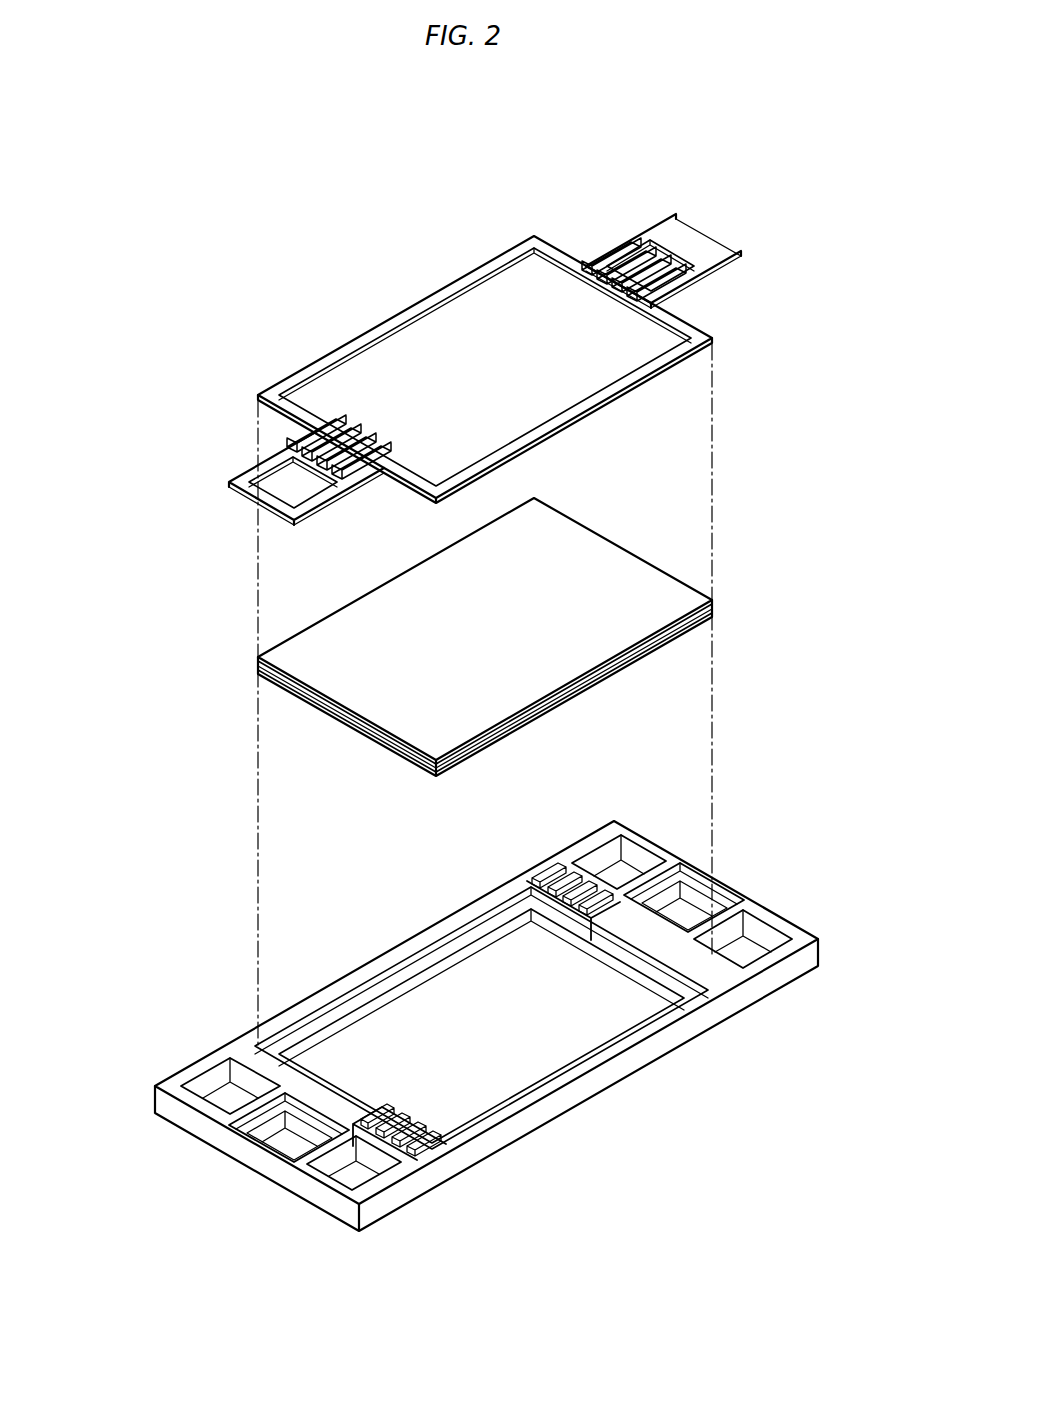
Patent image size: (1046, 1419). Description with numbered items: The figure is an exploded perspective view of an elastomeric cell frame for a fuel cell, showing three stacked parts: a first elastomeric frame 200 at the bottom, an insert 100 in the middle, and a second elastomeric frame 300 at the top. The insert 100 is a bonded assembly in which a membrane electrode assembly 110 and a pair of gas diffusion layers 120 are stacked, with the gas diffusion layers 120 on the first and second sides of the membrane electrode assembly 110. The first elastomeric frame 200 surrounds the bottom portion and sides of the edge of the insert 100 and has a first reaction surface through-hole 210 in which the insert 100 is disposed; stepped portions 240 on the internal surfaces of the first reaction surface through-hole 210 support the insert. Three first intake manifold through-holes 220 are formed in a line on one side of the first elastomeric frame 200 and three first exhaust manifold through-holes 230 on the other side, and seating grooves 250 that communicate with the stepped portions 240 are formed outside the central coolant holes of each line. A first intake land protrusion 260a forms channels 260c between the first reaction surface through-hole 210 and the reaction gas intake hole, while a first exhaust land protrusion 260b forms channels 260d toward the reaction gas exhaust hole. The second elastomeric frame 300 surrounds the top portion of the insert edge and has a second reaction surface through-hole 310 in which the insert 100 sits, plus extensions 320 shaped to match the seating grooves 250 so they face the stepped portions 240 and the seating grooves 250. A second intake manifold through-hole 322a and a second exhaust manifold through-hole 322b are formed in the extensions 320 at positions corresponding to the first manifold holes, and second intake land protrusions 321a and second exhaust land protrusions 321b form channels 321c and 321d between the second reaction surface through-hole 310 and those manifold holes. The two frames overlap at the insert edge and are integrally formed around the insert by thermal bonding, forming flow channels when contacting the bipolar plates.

The insert 100 is at (383, 637).
The membrane electrode assembly 110 is at (258, 668).
The gas diffusion layers 120 is at (258, 660).
The first elastomeric frame 200 is at (583, 1116).
The first reaction surface through-hole 210 is at (454, 985).
The first intake manifold through-holes 220 is at (288, 1139).
The first exhaust manifold through-holes 230 is at (686, 920).
The stepped portions 240 is at (354, 1006).
The seating grooves 250 is at (332, 1103).
The first intake land protrusion 260a is at (415, 1143).
The first exhaust land protrusion 260b is at (583, 907).
The channels 260c is at (377, 1140).
The channels 260d is at (552, 889).
The second elastomeric frame 300 is at (528, 214).
The second reaction surface through-hole 310 is at (432, 348).
The extensions 320 is at (230, 483).
The second intake land protrusions 321a is at (349, 431).
The second exhaust land protrusions 321b is at (637, 255).
The channels 321c is at (295, 446).
The channels 321d is at (629, 294).
The second intake manifold through-hole 322a is at (292, 489).
The second exhaust manifold through-hole 322b is at (699, 266).